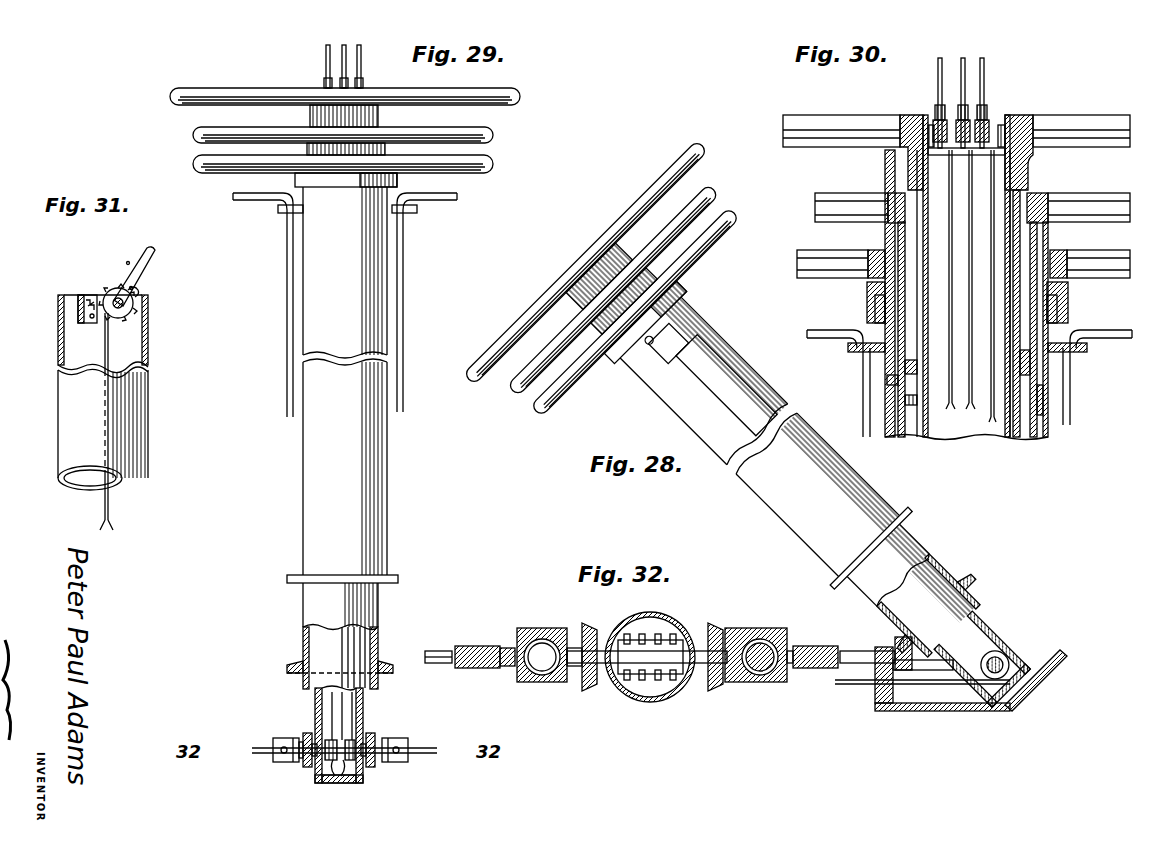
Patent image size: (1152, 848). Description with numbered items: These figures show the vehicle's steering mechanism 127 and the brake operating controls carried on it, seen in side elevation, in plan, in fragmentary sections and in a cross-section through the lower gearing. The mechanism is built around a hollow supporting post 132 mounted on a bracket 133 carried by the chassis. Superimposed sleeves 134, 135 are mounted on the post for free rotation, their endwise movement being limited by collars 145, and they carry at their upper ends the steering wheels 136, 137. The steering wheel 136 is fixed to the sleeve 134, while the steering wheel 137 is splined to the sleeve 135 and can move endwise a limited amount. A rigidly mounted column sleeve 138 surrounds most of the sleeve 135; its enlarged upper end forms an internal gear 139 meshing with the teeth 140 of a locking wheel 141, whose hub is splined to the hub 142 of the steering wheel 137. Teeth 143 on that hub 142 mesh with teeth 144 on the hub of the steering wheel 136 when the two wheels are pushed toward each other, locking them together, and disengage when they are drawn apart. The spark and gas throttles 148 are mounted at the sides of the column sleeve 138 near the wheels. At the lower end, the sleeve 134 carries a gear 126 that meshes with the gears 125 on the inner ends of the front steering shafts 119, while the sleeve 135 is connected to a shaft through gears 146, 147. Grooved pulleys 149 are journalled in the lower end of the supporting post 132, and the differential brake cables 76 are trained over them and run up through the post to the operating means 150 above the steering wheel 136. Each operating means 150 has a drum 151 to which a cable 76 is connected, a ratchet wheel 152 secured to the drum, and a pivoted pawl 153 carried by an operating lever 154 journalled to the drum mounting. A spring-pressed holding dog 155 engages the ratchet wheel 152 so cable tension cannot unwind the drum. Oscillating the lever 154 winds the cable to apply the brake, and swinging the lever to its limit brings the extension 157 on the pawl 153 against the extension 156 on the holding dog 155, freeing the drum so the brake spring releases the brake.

In FIG. 29, the operating cable 76 is at (322, 695).
In FIG. 30, the operating cable 76 is at (968, 410).
In FIG. 28, the operating cable 76 is at (846, 684).
In FIG. 29, the steering shaft 119 is at (257, 744).
In FIG. 29, the gear 125 is at (378, 739).
In FIG. 29, the gear 126 is at (303, 732).
In FIG. 28, the gear 126 is at (985, 640).
In FIG. 28, the steering mechanism 127 is at (871, 548).
In FIG. 29, the hollow supporting post 132 is at (364, 777).
In FIG. 30, the hollow supporting post 132 is at (1000, 438).
In FIG. 28, the hollow supporting post 132 is at (1020, 677).
In FIG. 28, the bracket 133 is at (1027, 707).
In FIG. 29, the sleeve 134 is at (372, 708).
In FIG. 30, the sleeve 134 is at (1008, 440).
In FIG. 28, the sleeve 134 is at (982, 659).
In FIG. 29, the sleeve 135 is at (382, 640).
In FIG. 30, the sleeve 135 is at (1033, 436).
In FIG. 28, the sleeve 135 is at (927, 604).
In FIG. 29, the steering wheel 136 is at (510, 105).
In FIG. 30, the steering wheel 136 is at (1077, 117).
In FIG. 28, the steering wheel 136 is at (586, 263).
In FIG. 29, the steering wheel 137 is at (495, 140).
In FIG. 30, the steering wheel 137 is at (1106, 183).
In FIG. 28, the steering wheel 137 is at (612, 289).
In FIG. 29, the column sleeve 138 is at (375, 517).
In FIG. 30, the column sleeve 138 is at (1050, 408).
In FIG. 28, the column sleeve 138 is at (759, 436).
In FIG. 30, the internal gear 139 is at (1068, 316).
In FIG. 30, the teeth 140 is at (1068, 291).
In FIG. 29, the locking wheel 141 is at (493, 170).
In FIG. 30, the locking wheel 141 is at (1096, 262).
In FIG. 28, the locking wheel 141 is at (635, 312).
In FIG. 30, the hub 142 is at (1050, 250).
In FIG. 30, the teeth 143 is at (1030, 200).
In FIG. 29, the teeth 144 is at (380, 116).
In FIG. 30, the teeth 144 is at (1033, 173).
In FIG. 30, the collar 145 is at (906, 368).
In FIG. 29, the gear 146 is at (288, 276).
In FIG. 30, the gear 146 is at (1073, 388).
In FIG. 28, the gear 146 is at (935, 612).
In FIG. 28, the gear 147 is at (912, 680).
In FIG. 28, the spark and gas throttles 148 is at (710, 378).
In FIG. 29, the grooved pulley 149 is at (342, 780).
In FIG. 32, the grooved pulley 149 is at (650, 692).
In FIG. 28, the grooved pulley 149 is at (995, 665).
In FIG. 29, the operating means 150 is at (362, 74).
In FIG. 30, the operating means 150 is at (988, 110).
In FIG. 31, the drum 151 is at (135, 315).
In FIG. 30, the drum 151 is at (1005, 115).
In FIG. 31, the ratchet wheel 152 is at (130, 320).
In FIG. 30, the ratchet wheel 152 is at (923, 130).
In FIG. 31, the pawl 153 is at (140, 291).
In FIG. 31, the operating lever 154 is at (158, 257).
In FIG. 30, the operating lever 154 is at (945, 63).
In FIG. 31, the holding dog 155 is at (77, 310).
In FIG. 31, the extension 156 is at (97, 294).
In FIG. 31, the extension 157 is at (128, 262).